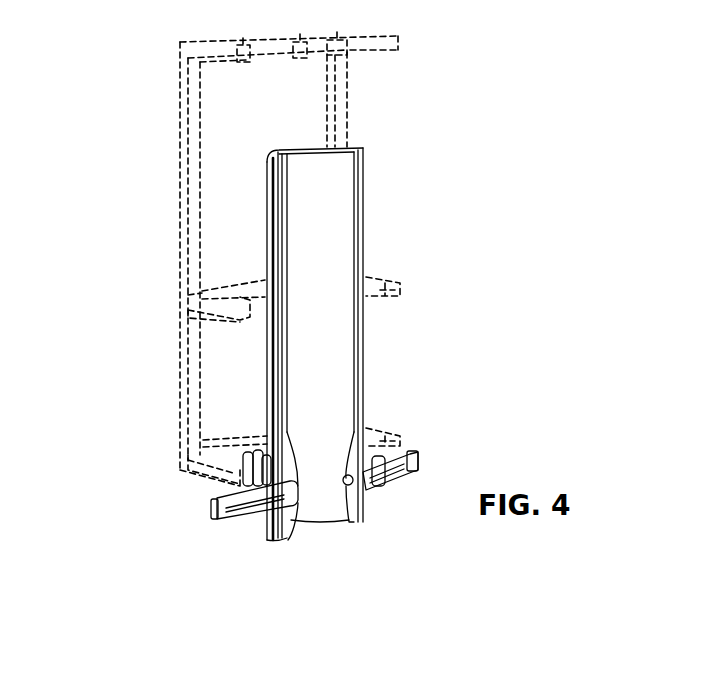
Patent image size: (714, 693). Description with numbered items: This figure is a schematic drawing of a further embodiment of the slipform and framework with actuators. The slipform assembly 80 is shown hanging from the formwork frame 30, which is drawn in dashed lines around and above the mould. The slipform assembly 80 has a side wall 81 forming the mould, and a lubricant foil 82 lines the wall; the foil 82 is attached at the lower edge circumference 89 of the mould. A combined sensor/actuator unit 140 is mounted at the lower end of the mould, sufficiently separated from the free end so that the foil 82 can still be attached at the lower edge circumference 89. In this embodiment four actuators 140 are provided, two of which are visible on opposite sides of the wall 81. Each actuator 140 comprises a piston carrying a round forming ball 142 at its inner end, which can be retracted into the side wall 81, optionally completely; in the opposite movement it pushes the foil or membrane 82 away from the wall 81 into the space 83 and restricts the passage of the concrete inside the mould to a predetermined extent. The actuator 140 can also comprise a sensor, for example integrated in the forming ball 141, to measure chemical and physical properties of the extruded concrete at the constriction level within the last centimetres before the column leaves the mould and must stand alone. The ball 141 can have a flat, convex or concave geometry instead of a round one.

The formwork frame 30 is at (150, 60).
The slipform assembly 80 is at (311, 353).
The side wall 81 is at (365, 208).
The lubricant foil 82 is at (365, 245).
The space 83 is at (300, 514).
The lower edge circumference 89 is at (357, 520).
The actuator with sensor 140 is at (240, 520).
The forming ball 141 is at (298, 492).
The force sensor 142 is at (212, 502).